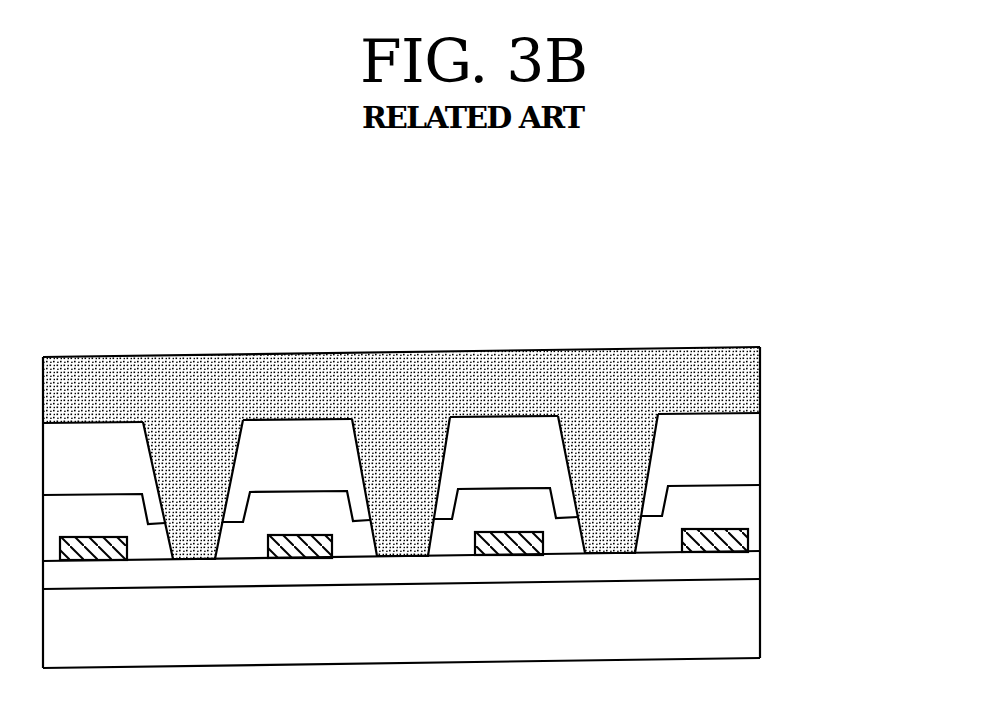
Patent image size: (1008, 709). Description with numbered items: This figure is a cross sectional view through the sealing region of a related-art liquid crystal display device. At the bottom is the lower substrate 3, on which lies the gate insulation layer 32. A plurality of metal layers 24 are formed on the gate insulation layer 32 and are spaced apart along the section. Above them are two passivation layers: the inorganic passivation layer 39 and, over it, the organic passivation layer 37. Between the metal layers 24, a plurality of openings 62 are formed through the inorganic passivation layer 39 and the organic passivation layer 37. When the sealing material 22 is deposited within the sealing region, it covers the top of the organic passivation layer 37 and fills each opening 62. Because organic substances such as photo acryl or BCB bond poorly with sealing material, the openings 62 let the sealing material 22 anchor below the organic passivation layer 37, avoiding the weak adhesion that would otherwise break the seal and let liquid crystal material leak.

The lower substrate 3 is at (755, 618).
The gate insulation layer 32 is at (753, 567).
The metal layers 24 is at (750, 541).
The inorganic passivation layer 39 is at (752, 499).
The organic passivation layer 37 is at (752, 452).
The sealing material 22 is at (750, 381).
The openings 62 is at (163, 467).